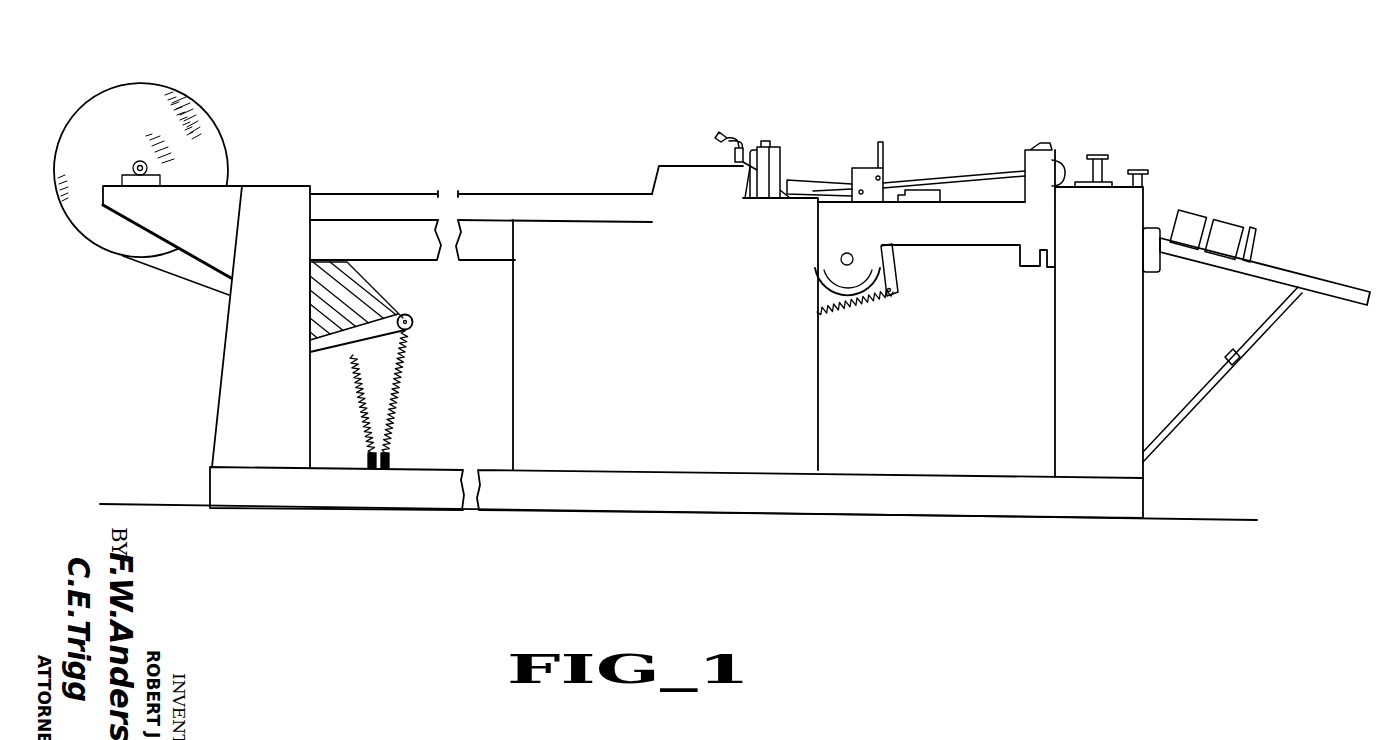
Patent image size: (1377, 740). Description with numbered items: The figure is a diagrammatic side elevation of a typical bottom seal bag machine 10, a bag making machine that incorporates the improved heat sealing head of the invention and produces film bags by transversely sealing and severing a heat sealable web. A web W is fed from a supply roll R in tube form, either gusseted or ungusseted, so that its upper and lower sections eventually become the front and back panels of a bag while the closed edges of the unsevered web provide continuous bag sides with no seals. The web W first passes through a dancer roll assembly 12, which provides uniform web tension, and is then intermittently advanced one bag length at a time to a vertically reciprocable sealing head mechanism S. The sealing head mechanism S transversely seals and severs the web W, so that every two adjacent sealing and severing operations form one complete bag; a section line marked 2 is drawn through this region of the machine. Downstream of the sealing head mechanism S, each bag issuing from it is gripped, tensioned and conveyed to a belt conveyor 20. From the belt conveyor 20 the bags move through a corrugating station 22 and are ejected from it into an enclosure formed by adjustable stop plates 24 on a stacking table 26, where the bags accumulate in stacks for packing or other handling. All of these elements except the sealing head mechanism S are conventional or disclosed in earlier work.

The supply roll R is at (133, 86).
The bottom seal bag machine 10 is at (386, 90).
The web W is at (167, 275).
The dancer roll assembly 12 is at (412, 332).
The section line 2- 2 is at (738, 327).
The sealing head mechanism S is at (787, 149).
The belt conveyor 20 is at (969, 170).
The corrugating station 22 is at (1123, 166).
The adjustable stop plates 24 is at (1229, 216).
The stacking table 26 is at (1302, 282).